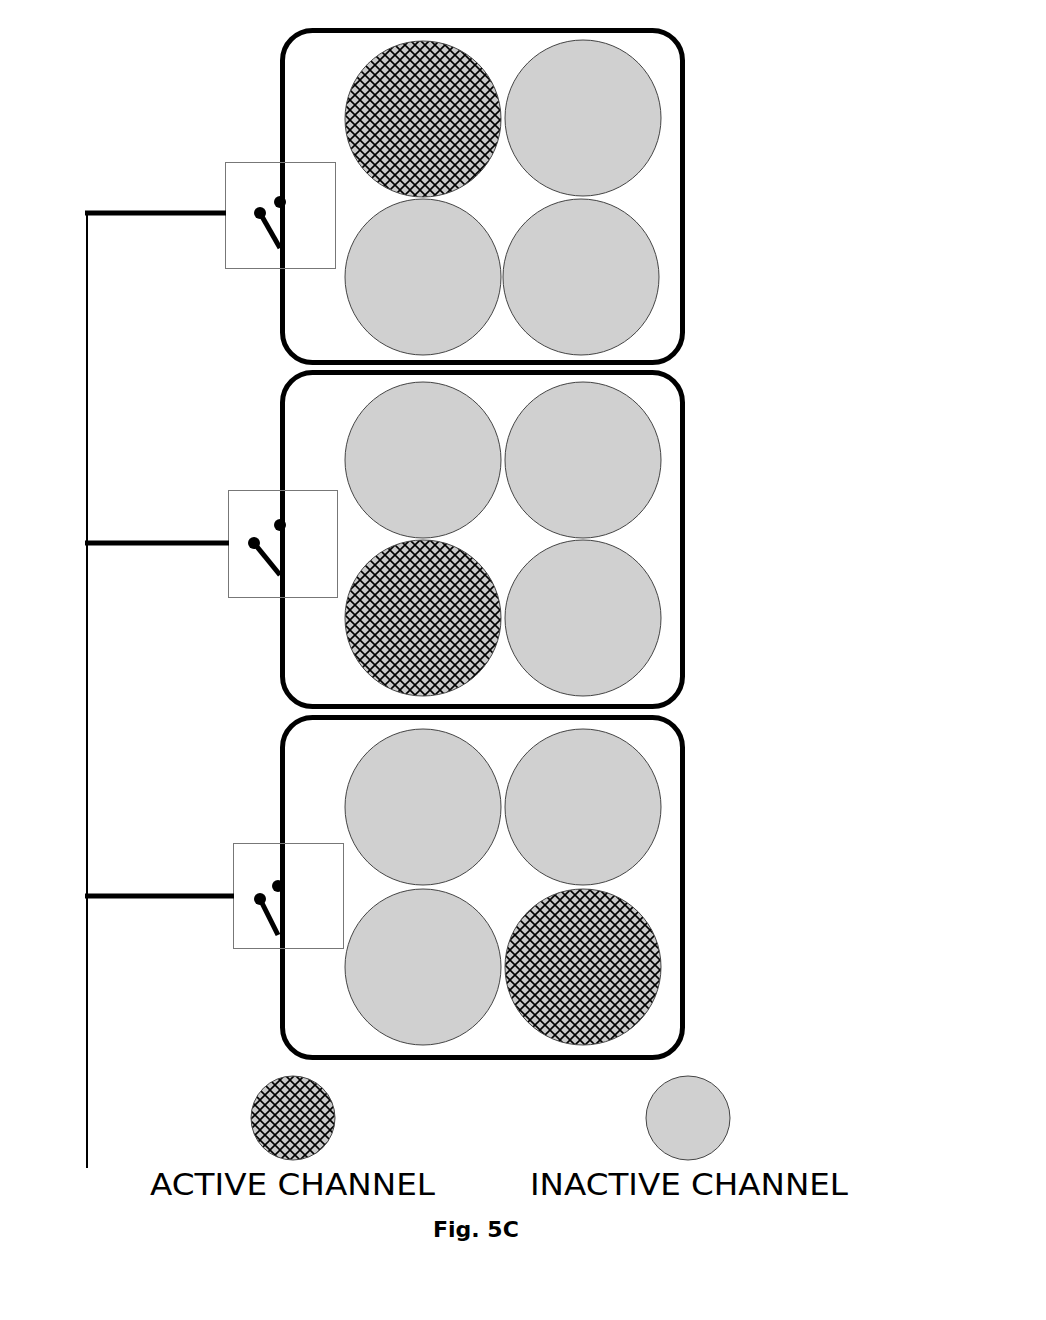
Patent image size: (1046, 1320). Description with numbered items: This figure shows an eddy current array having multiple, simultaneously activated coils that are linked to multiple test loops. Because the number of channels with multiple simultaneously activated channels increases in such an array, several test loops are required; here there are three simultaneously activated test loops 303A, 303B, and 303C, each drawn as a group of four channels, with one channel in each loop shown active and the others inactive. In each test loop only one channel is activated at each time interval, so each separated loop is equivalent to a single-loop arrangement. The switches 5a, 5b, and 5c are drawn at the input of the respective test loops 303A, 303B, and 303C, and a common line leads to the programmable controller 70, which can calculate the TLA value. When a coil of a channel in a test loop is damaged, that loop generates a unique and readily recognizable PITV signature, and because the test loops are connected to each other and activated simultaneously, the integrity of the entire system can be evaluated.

The test loop 303A is at (685, 195).
The test loop 303B is at (685, 537).
The test loop 303C is at (685, 887).
The first switch 5a is at (258, 215).
The second switch 5b is at (252, 545).
The third switch 5c is at (258, 901).
The programmable controller 70 is at (78, 708).